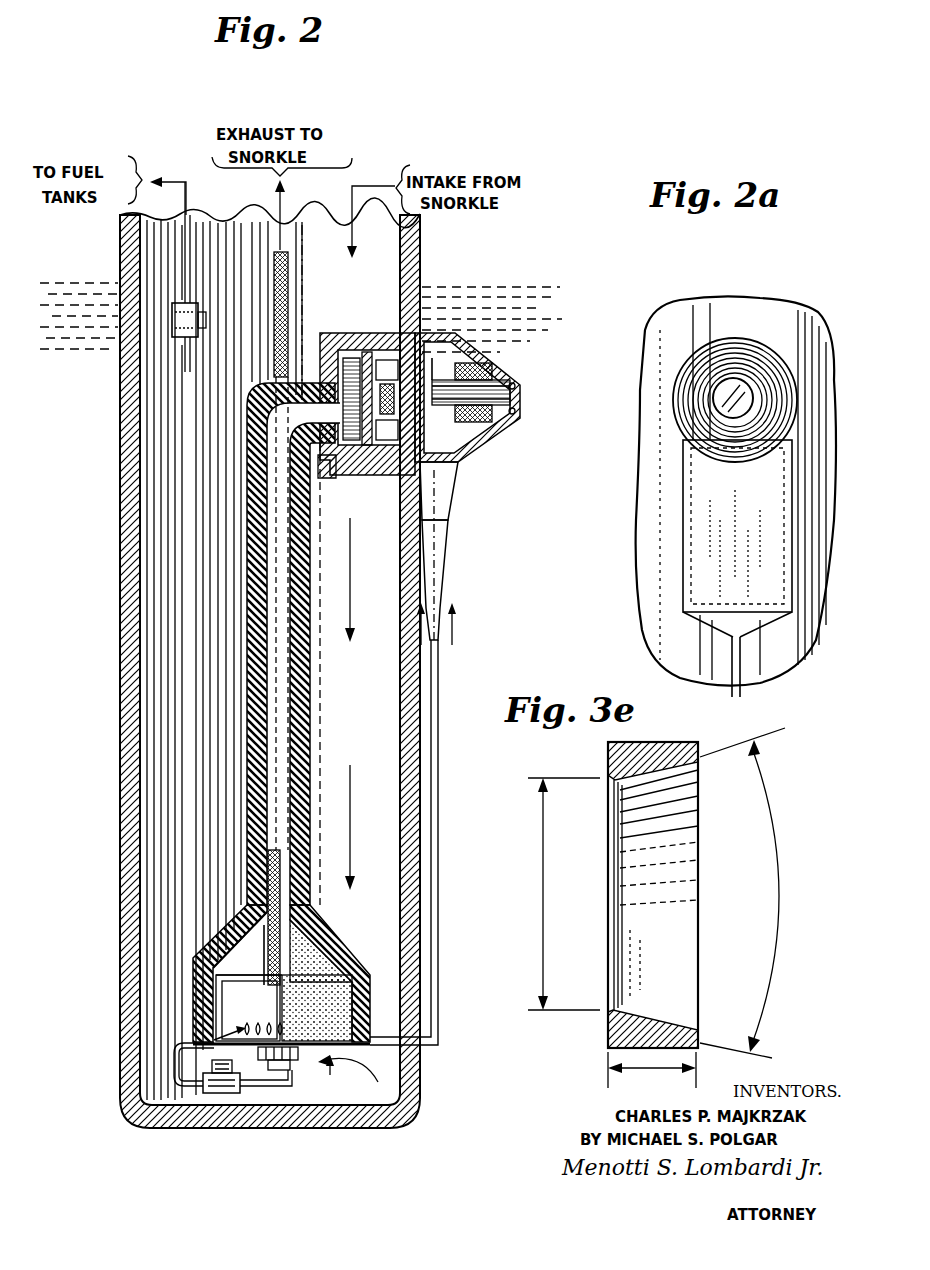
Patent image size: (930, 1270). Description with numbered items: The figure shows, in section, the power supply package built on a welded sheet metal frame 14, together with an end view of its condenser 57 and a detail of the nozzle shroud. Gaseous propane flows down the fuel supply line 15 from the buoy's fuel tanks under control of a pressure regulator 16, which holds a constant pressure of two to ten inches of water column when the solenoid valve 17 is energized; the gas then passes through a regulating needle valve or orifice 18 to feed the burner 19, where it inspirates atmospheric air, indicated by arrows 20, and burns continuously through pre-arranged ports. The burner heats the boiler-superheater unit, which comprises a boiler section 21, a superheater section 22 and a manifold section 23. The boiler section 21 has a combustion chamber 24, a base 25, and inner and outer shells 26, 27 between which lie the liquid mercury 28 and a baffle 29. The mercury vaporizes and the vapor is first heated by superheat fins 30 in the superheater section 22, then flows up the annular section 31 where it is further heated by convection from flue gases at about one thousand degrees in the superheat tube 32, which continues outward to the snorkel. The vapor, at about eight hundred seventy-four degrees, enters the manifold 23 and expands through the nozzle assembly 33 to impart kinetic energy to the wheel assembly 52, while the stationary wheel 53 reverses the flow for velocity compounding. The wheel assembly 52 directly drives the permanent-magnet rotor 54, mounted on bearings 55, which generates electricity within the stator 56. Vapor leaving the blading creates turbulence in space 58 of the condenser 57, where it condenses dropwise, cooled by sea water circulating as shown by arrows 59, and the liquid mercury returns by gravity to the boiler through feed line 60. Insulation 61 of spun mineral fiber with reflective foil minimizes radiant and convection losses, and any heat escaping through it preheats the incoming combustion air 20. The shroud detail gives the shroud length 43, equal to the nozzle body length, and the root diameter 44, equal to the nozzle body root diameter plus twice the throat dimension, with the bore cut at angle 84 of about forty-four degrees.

In FIG. 2, the frame 14 is at (120, 660).
In FIG. 2A, the frame 14 is at (640, 565).
In FIG. 2, the fuel supply line 15 is at (184, 432).
In FIG. 2, the pressure regulator 16 is at (183, 312).
In FIG. 2, the solenoid valve 17 is at (225, 1093).
In FIG. 2, the regulating needle valve or orifice 18 is at (299, 1072).
In FIG. 2, the burner 19 is at (213, 1040).
In FIG. 2, the arrows indicating atmospheric air 20 is at (350, 590).
In FIG. 2, the boiler section 21 is at (360, 985).
In FIG. 2, the superheater section 22 is at (281, 675).
In FIG. 2, the manifold section 23 is at (330, 464).
In FIG. 2, the combustion chamber 24 is at (270, 1006).
In FIG. 2, the base 25 is at (218, 1050).
In FIG. 2, the inner shell 26 is at (221, 1025).
In FIG. 2, the outer shell 27 is at (215, 998).
In FIG. 2, the liquid mercury 28 is at (220, 965).
In FIG. 2, the baffle 29 is at (222, 978).
In FIG. 2, the superheat fins 30 is at (262, 930).
In FIG. 2, the annular section 31 is at (268, 872).
In FIG. 2, the superheat tube 32 is at (273, 322).
In FIG. 2, the nozzle assembly 33 is at (366, 395).
In FIG. 3E, the shroud length 43 is at (662, 1076).
In FIG. 3E, the root diameter 44 is at (540, 884).
In FIG. 2, the wheel assembly 52 is at (432, 358).
In FIG. 2, the stationary wheel 53 is at (383, 470).
In FIG. 2, the permanent-magnet rotor 54 is at (493, 418).
In FIG. 2, the bearings 55 is at (452, 338).
In FIG. 2, the stator 56 is at (488, 372).
In FIG. 2, the condenser 57 is at (443, 553).
In FIG. 2A, the condenser 57 is at (690, 520).
In FIG. 2, the space 58 is at (452, 450).
In FIG. 2, the arrows indicating sea water circulation 59 is at (445, 652).
In FIG. 2, the feed line 60 is at (438, 765).
In FIG. 2A, the feed line 60 is at (741, 690).
In FIG. 2, the insulation 61 is at (247, 430).
In FIG. 3E, the angle 84 is at (755, 893).